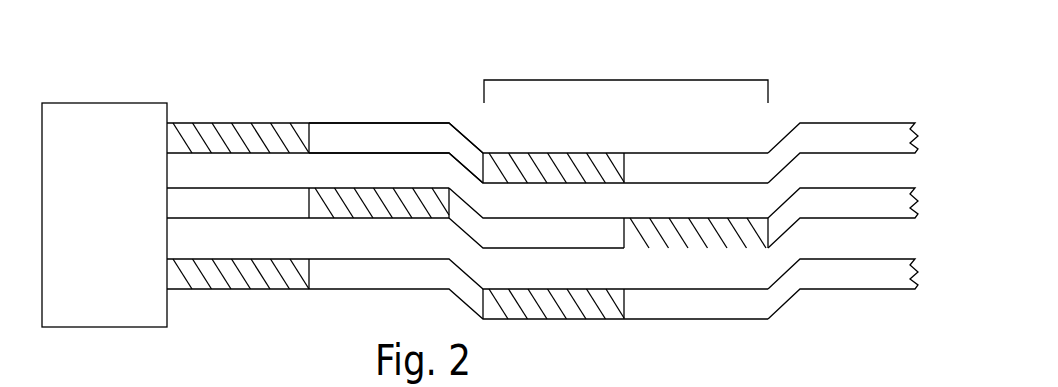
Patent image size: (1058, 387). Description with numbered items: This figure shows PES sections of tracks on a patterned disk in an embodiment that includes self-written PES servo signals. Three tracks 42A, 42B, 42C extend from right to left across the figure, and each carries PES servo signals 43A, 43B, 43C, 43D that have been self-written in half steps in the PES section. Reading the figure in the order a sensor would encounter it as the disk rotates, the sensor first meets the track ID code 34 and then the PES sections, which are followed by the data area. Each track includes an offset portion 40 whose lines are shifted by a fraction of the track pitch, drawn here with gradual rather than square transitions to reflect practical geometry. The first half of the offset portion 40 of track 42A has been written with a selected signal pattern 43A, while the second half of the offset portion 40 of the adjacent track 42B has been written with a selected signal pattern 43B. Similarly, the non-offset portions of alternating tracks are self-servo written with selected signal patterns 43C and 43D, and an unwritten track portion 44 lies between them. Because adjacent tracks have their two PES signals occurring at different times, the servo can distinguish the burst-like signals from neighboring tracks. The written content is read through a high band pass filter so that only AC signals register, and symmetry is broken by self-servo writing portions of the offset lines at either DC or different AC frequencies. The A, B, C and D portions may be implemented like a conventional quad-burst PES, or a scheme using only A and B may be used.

The track ID code 34 is at (90, 114).
The offset portion 40 is at (627, 80).
The track 42A is at (873, 126).
The track 42B is at (857, 211).
The track 42C is at (857, 283).
The selected signal pattern 43A is at (535, 157).
The selected signal pattern 43B is at (673, 243).
The selected signal pattern 43C is at (240, 123).
The selected signal pattern 43D is at (355, 213).
The unwritten track portion 44 is at (393, 125).